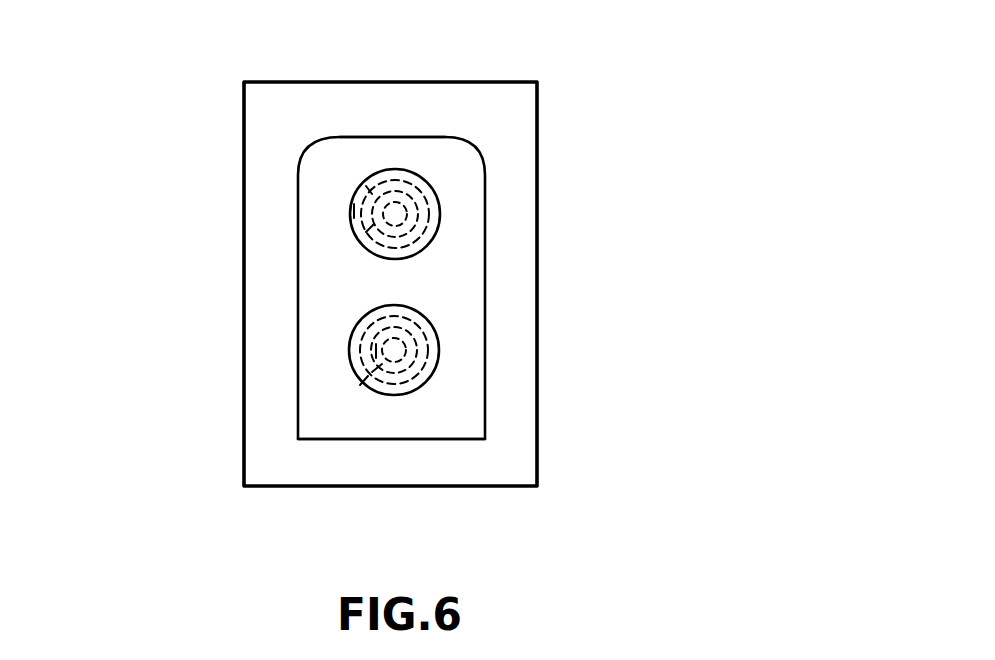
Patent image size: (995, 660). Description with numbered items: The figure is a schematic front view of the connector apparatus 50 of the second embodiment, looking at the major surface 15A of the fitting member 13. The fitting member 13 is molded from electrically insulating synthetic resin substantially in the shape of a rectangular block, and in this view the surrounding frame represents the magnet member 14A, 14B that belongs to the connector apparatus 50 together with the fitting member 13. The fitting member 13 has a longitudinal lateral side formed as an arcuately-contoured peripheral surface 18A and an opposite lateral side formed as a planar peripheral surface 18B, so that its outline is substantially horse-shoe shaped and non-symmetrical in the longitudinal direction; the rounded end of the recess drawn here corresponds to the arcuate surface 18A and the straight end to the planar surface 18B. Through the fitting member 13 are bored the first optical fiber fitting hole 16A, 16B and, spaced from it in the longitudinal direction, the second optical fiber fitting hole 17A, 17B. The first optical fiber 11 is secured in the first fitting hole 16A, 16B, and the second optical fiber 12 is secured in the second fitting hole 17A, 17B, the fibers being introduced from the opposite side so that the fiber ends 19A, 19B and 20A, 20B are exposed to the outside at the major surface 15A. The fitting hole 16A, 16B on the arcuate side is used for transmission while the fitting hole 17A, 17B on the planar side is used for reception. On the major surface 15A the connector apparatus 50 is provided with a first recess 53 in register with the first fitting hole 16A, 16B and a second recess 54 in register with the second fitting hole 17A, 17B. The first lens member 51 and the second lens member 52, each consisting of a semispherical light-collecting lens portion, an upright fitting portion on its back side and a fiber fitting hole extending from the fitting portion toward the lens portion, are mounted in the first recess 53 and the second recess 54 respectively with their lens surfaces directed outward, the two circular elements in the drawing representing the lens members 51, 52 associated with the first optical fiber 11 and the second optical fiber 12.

The connector apparatus 50 is at (414, 287).
The magnet member 14A is at (476, 284).
The magnet member 14B is at (522, 128).
The fitting member 13 is at (460, 273).
The arcuately-contoured peripheral lateral surface 18A is at (420, 136).
The planar peripheral lateral surface 18B is at (442, 440).
The major surface 15A is at (358, 406).
The first optical fiber 11 is at (561, 214).
The end of optical fiber 19A is at (561, 214).
The end of optical fiber 19B is at (406, 207).
The second optical fiber 12 is at (563, 350).
The end of optical fiber 20A is at (563, 350).
The end of optical fiber 20B is at (410, 351).
The first lens member 51 is at (355, 211).
The second lens member 52 is at (378, 352).
The first recess 53 is at (368, 190).
The second recess 54 is at (364, 380).
The first optical fiber fitting hole 16A is at (213, 258).
The first optical fiber fitting hole 16B is at (370, 227).
The second optical fiber fitting hole 17A is at (220, 412).
The second optical fiber fitting hole 17B is at (377, 367).